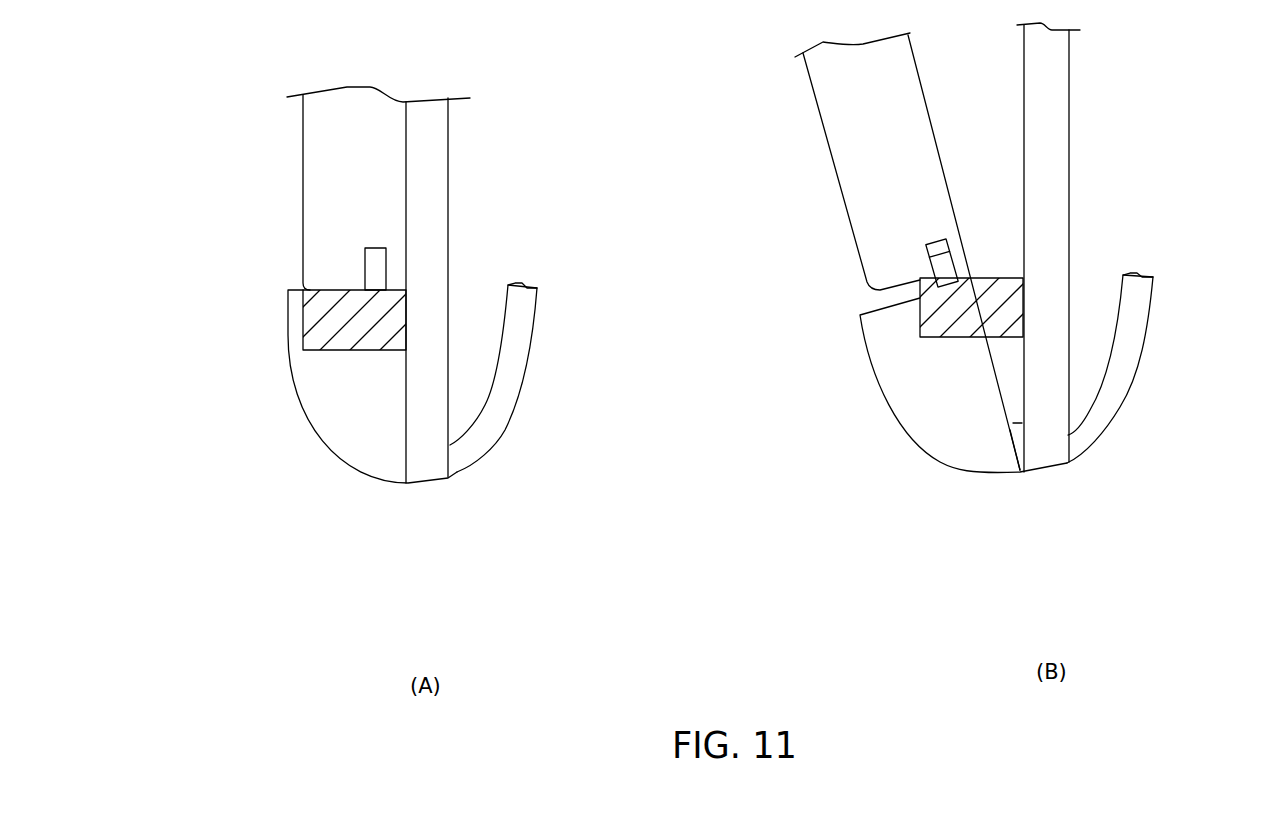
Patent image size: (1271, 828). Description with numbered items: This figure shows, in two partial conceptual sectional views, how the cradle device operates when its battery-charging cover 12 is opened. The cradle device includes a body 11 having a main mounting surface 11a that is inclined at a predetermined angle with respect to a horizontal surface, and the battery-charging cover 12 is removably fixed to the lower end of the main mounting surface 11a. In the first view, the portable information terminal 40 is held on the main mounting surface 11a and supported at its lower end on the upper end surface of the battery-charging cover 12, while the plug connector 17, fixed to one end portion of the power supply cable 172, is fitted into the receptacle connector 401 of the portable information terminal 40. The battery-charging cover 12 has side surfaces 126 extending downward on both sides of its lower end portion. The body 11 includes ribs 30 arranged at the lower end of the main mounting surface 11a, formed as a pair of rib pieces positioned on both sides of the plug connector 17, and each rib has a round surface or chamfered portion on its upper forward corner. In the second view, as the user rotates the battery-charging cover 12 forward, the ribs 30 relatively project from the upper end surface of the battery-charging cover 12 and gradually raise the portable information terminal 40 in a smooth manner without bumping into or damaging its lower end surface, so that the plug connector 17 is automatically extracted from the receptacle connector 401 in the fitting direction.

The portable information terminal 40 is at (312, 178).
The receptacle connector 401 is at (367, 247).
The ribs 30 is at (355, 335).
The body 11 is at (428, 463).
The main mounting surface 11a is at (1022, 190).
The battery-charging cover 12 is at (318, 427).
The side surfaces 126 is at (1022, 443).
The plug connector 17 is at (375, 267).
The power supply cable 172 is at (505, 380).